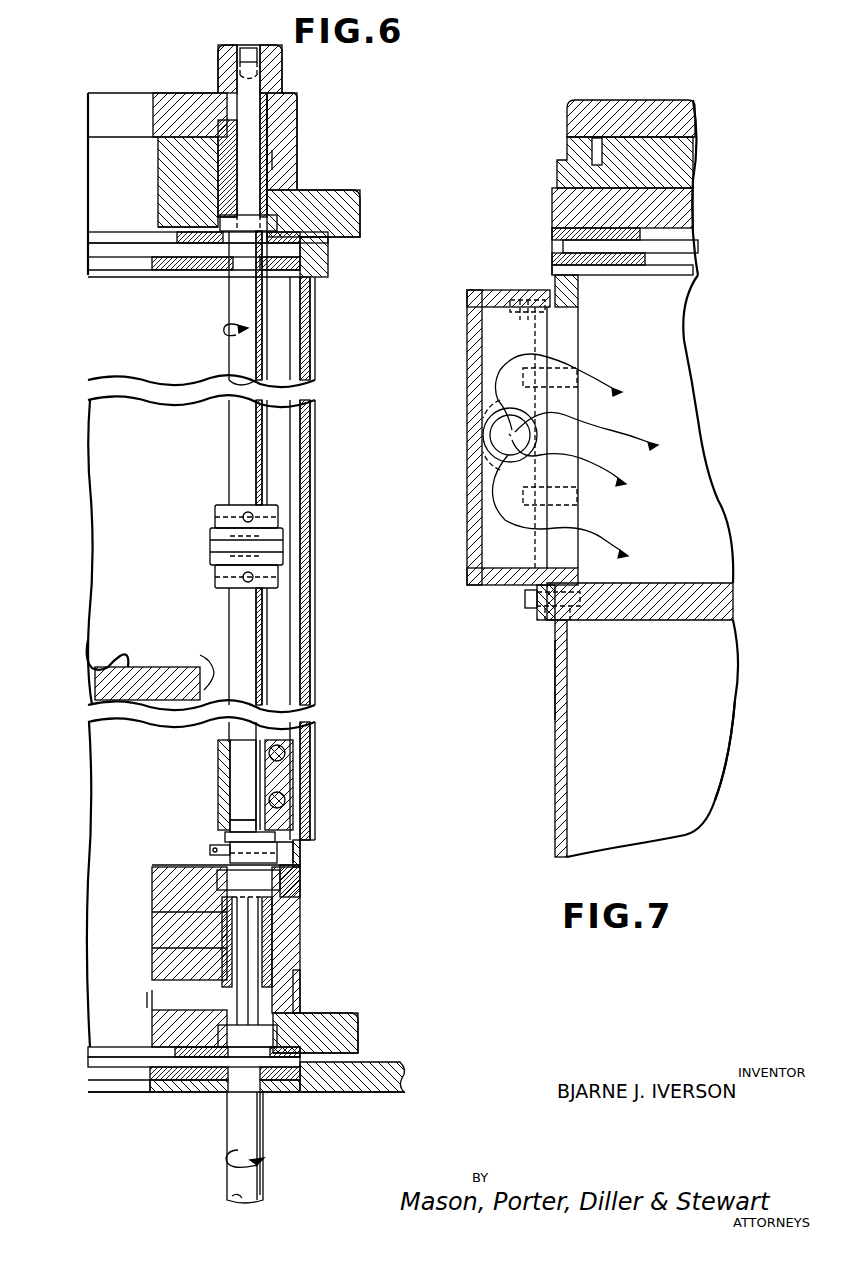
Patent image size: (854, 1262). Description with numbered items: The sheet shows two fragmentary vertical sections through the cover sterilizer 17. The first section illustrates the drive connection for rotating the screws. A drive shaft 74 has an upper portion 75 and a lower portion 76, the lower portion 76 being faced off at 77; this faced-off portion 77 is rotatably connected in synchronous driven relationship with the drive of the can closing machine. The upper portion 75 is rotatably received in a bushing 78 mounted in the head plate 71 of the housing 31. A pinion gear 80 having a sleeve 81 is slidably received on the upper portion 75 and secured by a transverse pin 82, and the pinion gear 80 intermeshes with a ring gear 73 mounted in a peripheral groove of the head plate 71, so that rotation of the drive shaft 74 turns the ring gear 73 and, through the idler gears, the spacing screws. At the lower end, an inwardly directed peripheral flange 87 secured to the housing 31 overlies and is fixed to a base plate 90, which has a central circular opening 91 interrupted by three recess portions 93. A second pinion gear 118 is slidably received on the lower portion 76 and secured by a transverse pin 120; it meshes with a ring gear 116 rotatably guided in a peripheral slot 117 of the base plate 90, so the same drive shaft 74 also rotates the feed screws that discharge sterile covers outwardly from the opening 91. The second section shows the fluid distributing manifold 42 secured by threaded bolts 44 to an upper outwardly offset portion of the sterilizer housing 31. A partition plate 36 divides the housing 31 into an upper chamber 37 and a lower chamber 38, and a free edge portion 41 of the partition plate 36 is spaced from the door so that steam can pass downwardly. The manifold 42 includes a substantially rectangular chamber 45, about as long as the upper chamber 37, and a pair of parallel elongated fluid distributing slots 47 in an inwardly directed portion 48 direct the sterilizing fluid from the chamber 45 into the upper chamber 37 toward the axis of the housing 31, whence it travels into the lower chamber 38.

In FIG. 7, the cover sterilizer 17 is at (553, 696).
In FIG. 7, the housing 31 is at (567, 722).
In FIG. 6, the partition plate 36 is at (110, 660).
In FIG. 7, the partition plate 36 is at (664, 598).
In FIG. 7, the upper chamber 37 is at (648, 402).
In FIG. 7, the lower chamber 38 is at (630, 790).
In FIG. 6, the free edge portion 41 is at (208, 652).
In FIG. 7, the fluid distributing manifold 42 is at (460, 405).
In FIG. 7, the threaded bolts 44 is at (510, 288).
In FIG. 7, the rectangular chamber 45 is at (495, 366).
In FIG. 7, the fluid distributing slots 47 is at (565, 336).
In FIG. 7, the inwardly directed portion 48 is at (580, 298).
In FIG. 6, the head plate 71 is at (298, 108).
In FIG. 7, the head plate 71 is at (648, 100).
In FIG. 6, the ring gear 73 is at (298, 153).
In FIG. 6, the drive shaft 74 is at (266, 461).
In FIG. 6, the upper portion 75 is at (258, 320).
In FIG. 6, the lower portion 76 is at (246, 975).
In FIG. 6, the faced-off portion 77 is at (250, 1186).
In FIG. 6, the bushing 78 is at (272, 181).
In FIG. 6, the pinion gear 80 is at (222, 157).
In FIG. 6, the sleeve 81 is at (222, 96).
In FIG. 6, the transverse pin 82 is at (218, 52).
In FIG. 6, the inwardly directed peripheral flange 87 is at (276, 887).
In FIG. 6, the base plate 90 is at (215, 947).
In FIG. 6, the central circular opening 91 is at (150, 1000).
In FIG. 6, the recess portions 93 is at (152, 1025).
In FIG. 6, the ring gear 116 is at (300, 978).
In FIG. 6, the peripheral slot 117 is at (295, 1002).
In FIG. 6, the pinion gear 118 is at (222, 974).
In FIG. 6, the transverse pin 120 is at (272, 920).